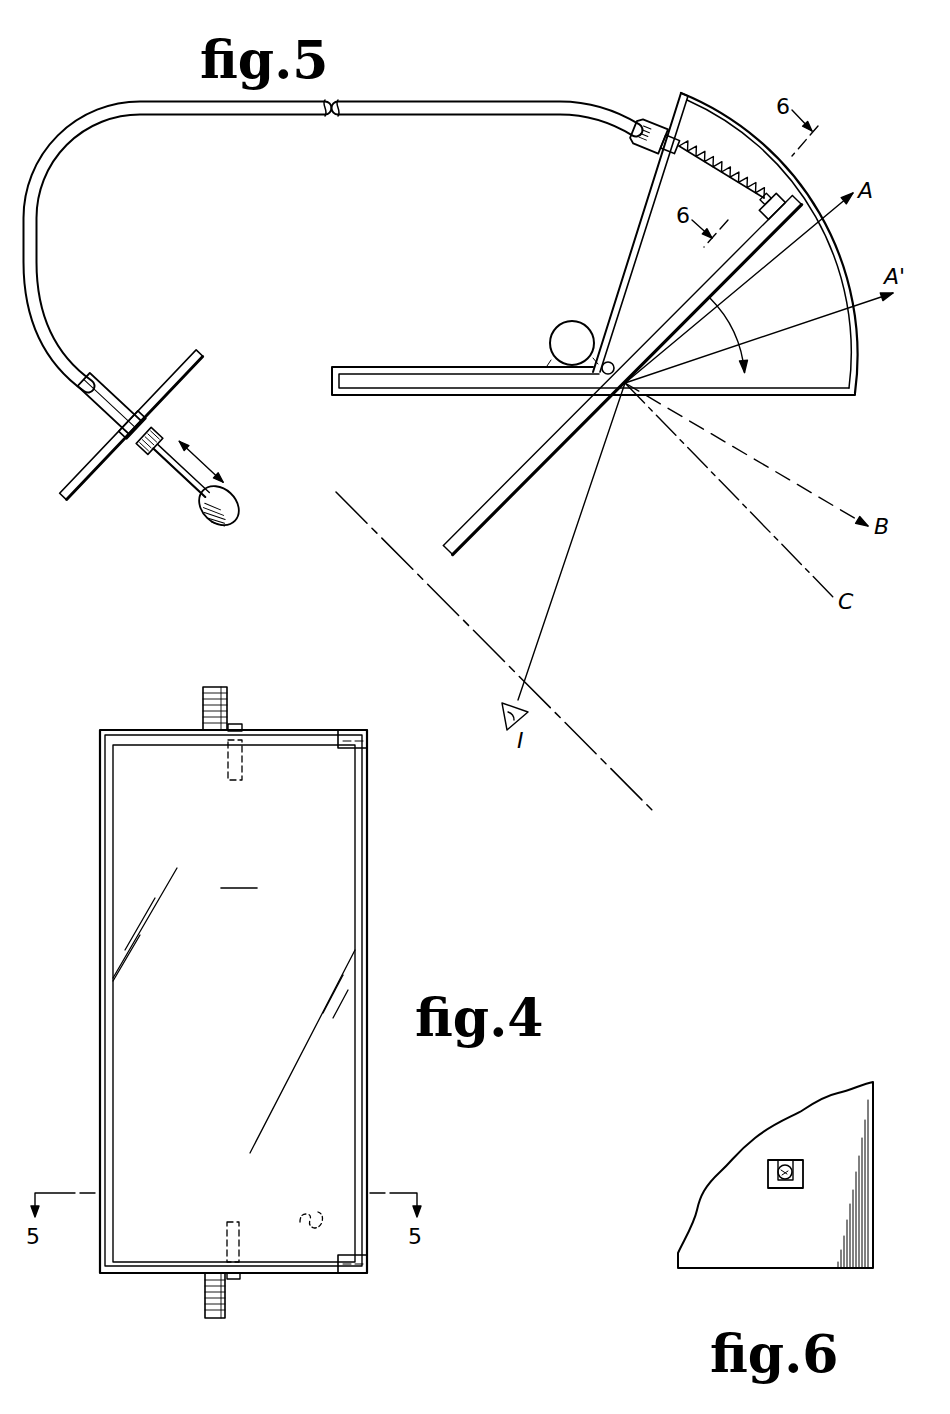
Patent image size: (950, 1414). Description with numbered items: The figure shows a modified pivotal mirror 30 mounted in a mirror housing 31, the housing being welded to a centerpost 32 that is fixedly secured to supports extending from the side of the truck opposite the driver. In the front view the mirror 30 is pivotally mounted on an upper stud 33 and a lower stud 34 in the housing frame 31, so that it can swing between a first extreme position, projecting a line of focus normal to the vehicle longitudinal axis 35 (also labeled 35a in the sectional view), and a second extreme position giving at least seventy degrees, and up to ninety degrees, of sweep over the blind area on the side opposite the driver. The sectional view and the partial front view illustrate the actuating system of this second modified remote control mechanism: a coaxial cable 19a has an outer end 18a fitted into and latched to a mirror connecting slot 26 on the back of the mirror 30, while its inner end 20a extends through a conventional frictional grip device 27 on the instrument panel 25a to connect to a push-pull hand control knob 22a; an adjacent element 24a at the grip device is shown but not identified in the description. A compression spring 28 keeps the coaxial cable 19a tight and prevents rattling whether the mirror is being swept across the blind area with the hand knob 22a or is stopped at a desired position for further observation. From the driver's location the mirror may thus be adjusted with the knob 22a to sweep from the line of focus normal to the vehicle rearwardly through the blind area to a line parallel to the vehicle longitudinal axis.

In FIG. 5, the coaxial cable 19a is at (424, 100).
In FIG. 5, the compression spring 28 is at (687, 134).
In FIG. 5, the cable outer end 18a is at (715, 164).
In FIG. 6, the cable outer end 18a is at (788, 1166).
In FIG. 5, the mirror connecting slot 26 is at (776, 198).
In FIG. 6, the mirror connecting slot 26 is at (768, 1176).
In FIG. 5, the vehicle longitudinal axis 35 is at (645, 205).
In FIG. 5, the mirror housing 31 is at (836, 248).
In FIG. 4, the mirror housing 31 is at (116, 730).
In FIG. 5, the centerpost 32 is at (567, 324).
In FIG. 4, the centerpost 32 is at (204, 696).
In FIG. 5, the upper stud 33 is at (614, 360).
In FIG. 4, the upper stud 33 is at (238, 724).
In FIG. 5, the mirror 30 is at (519, 468).
In FIG. 4, the mirror 30 is at (234, 1044).
In FIG. 5, the vehicle longitudinal axis 35a is at (584, 738).
In FIG. 5, the frictional grip device 27 is at (112, 398).
In FIG. 5, the instrument panel 25a is at (84, 471).
In FIG. 5, the nut 24a is at (156, 432).
In FIG. 5, the cable inner end 20a is at (170, 470).
In FIG. 5, the push-pull hand control knob 22a is at (200, 525).
In FIG. 4, the lower stud 34 is at (238, 1278).